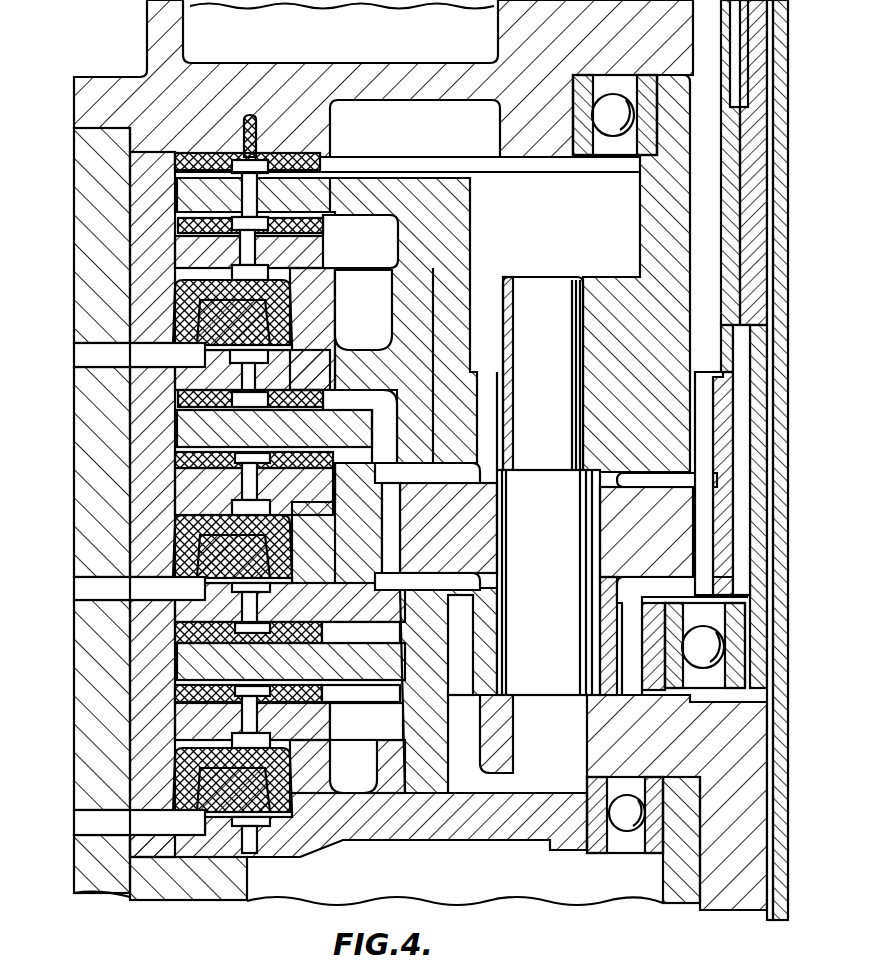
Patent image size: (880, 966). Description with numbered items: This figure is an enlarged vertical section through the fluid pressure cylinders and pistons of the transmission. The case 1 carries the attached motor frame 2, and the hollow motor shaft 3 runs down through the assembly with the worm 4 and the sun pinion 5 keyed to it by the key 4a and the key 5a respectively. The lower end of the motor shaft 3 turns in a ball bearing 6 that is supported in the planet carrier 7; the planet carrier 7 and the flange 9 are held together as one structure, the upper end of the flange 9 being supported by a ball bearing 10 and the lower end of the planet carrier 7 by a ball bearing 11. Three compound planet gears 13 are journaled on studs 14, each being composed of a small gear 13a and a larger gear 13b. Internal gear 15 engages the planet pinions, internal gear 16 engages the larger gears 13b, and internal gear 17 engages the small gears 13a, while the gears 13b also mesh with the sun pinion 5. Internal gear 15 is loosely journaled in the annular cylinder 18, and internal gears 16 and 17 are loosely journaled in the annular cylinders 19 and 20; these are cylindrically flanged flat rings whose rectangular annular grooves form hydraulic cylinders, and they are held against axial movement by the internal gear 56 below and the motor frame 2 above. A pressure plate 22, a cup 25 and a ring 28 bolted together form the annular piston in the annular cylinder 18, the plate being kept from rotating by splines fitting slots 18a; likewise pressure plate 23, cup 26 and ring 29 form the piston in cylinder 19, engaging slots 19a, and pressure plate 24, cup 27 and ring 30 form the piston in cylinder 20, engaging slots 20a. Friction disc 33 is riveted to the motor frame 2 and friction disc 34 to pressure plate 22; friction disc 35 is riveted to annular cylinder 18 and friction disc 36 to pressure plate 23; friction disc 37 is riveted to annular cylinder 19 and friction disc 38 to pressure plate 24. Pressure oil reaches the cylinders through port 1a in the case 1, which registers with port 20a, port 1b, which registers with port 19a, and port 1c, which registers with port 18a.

The case 1 is at (85, 162).
The port 1a is at (85, 826).
The port 1b is at (85, 594).
The port 1c is at (85, 357).
The motor frame 2 is at (180, 46).
The hollow motor shaft 3 is at (753, 205).
The worm 4 is at (730, 193).
The key 4a is at (738, 42).
The sun pinion 5 is at (705, 372).
The key 5a is at (750, 393).
The ball bearing 6 is at (690, 615).
The planet carrier 7 is at (488, 762).
The flange 9 is at (645, 212).
The ball bearing 10 is at (580, 160).
The ball bearing 11 is at (613, 850).
The compound planet gear 13 is at (490, 578).
The small gear 13a is at (633, 603).
The larger gear 13b is at (395, 497).
The stud 14 is at (547, 287).
The internal gear 15 is at (455, 222).
The internal gear 16 is at (357, 413).
The internal gear 17 is at (422, 714).
The annular cylinder 18 is at (137, 247).
The slot 18a is at (150, 350).
The annular cylinder 19 is at (150, 430).
The slot 19a is at (147, 603).
The annular cylinder 20 is at (137, 722).
The slot 20a is at (148, 836).
The pressure plate 22 is at (325, 258).
The pressure plate 23 is at (190, 490).
The pressure plate 24 is at (312, 725).
The cup 25 is at (282, 295).
The cup 26 is at (185, 533).
The cup 27 is at (287, 762).
The ring 28 is at (260, 323).
The ring 29 is at (205, 558).
The ring 30 is at (262, 790).
The friction disc 33 is at (320, 167).
The friction disc 34 is at (322, 230).
The friction disc 35 is at (190, 398).
The friction disc 36 is at (190, 458).
The friction disc 37 is at (322, 633).
The friction disc 38 is at (322, 695).
The internal gear 56 is at (238, 886).